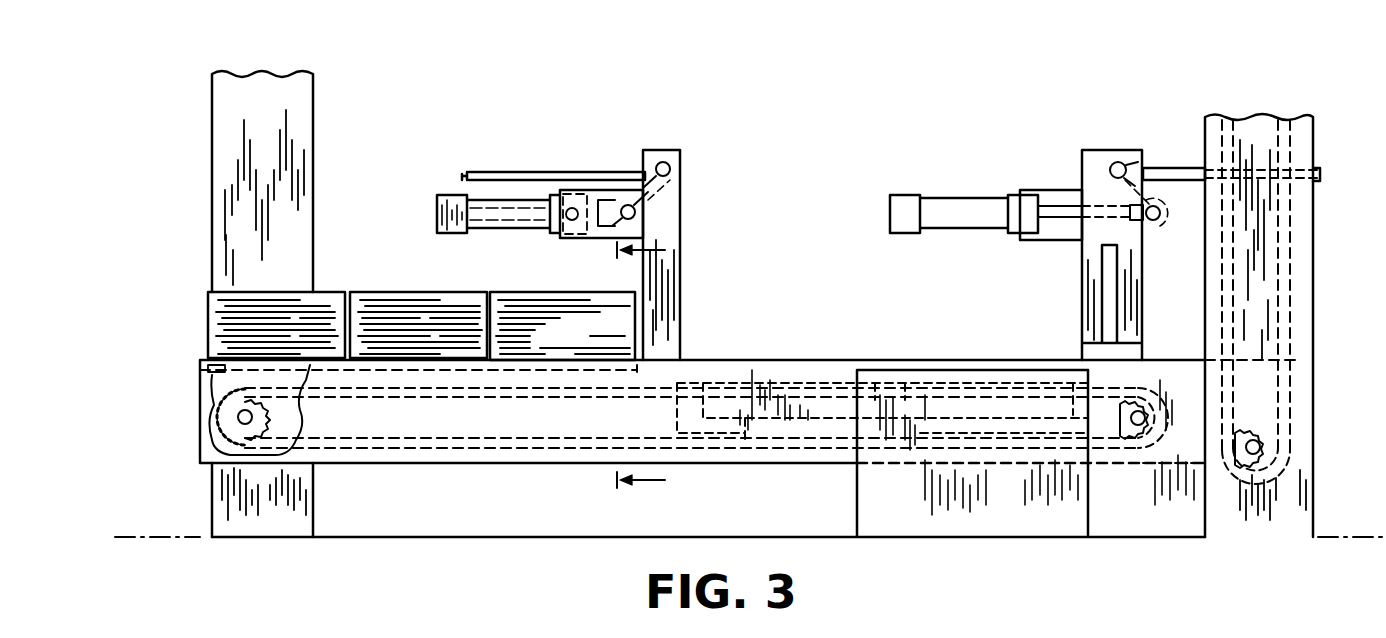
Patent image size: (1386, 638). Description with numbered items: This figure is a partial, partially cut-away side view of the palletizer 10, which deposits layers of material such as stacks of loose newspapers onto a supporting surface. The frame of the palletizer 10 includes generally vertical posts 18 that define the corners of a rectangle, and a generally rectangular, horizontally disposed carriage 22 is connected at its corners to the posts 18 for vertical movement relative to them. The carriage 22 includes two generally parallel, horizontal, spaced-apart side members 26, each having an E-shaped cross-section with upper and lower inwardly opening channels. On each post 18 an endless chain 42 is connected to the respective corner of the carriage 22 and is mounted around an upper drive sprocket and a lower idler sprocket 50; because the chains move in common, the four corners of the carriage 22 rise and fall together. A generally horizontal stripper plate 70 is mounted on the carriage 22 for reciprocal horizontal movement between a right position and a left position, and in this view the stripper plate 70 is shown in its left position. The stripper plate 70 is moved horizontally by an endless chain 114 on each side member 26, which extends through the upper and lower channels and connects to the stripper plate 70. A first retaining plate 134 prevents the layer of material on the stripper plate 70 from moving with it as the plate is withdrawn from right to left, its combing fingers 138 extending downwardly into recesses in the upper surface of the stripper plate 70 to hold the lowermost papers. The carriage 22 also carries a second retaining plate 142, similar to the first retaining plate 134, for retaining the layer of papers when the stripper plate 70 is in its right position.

The palletizer 10 is at (202, 100).
The post 18 is at (233, 163).
The carriage 22 is at (1168, 368).
The side member 26 is at (835, 455).
The endless chain 42 is at (1290, 228).
The lower idler sprocket 50 is at (1290, 450).
The stripper plate 70 is at (523, 358).
The endless chain 114 is at (345, 446).
The first retaining plate 134 is at (567, 175).
The combing fingers 138 is at (468, 176).
The second retaining plate 142 is at (1175, 168).